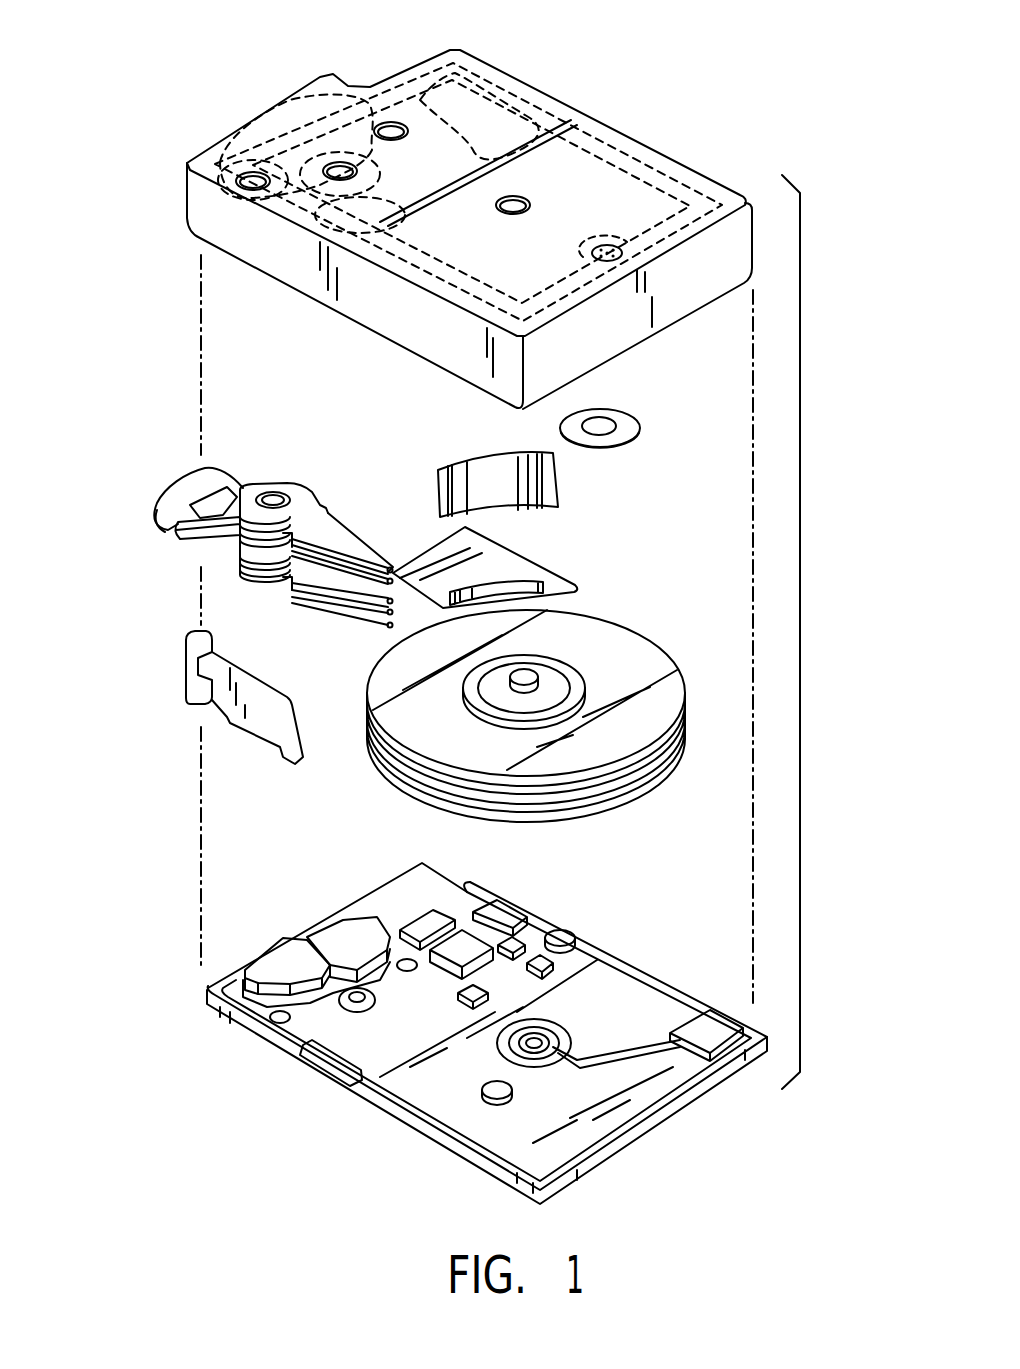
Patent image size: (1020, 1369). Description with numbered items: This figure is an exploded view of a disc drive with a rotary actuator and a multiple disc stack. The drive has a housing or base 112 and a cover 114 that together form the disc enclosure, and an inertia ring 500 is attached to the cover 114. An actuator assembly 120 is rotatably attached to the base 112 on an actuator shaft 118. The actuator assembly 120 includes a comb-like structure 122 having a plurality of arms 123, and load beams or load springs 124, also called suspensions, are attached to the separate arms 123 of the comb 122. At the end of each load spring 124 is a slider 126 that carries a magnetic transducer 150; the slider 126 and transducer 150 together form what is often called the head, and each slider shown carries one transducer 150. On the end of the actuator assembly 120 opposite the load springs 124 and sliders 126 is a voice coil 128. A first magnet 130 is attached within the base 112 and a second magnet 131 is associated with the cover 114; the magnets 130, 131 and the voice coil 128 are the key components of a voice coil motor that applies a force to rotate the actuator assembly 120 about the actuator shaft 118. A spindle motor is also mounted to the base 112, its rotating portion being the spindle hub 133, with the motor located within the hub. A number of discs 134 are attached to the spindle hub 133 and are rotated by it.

The base 112 is at (655, 995).
The cover 114 is at (729, 198).
The actuator shaft 118 is at (275, 496).
The actuator assembly 120 is at (222, 546).
The comb-like structure 122 is at (296, 604).
The arms 123 is at (335, 515).
The load springs 124 is at (343, 540).
The slider 126 is at (390, 568).
The voice coil 128 is at (178, 498).
The first magnet 130 is at (295, 108).
The second magnet 131 is at (273, 948).
The spindle hub 133 is at (536, 676).
The discs 134 is at (652, 655).
The magnetic transducer 150 is at (427, 540).
The inertia ring 500 is at (450, 72).